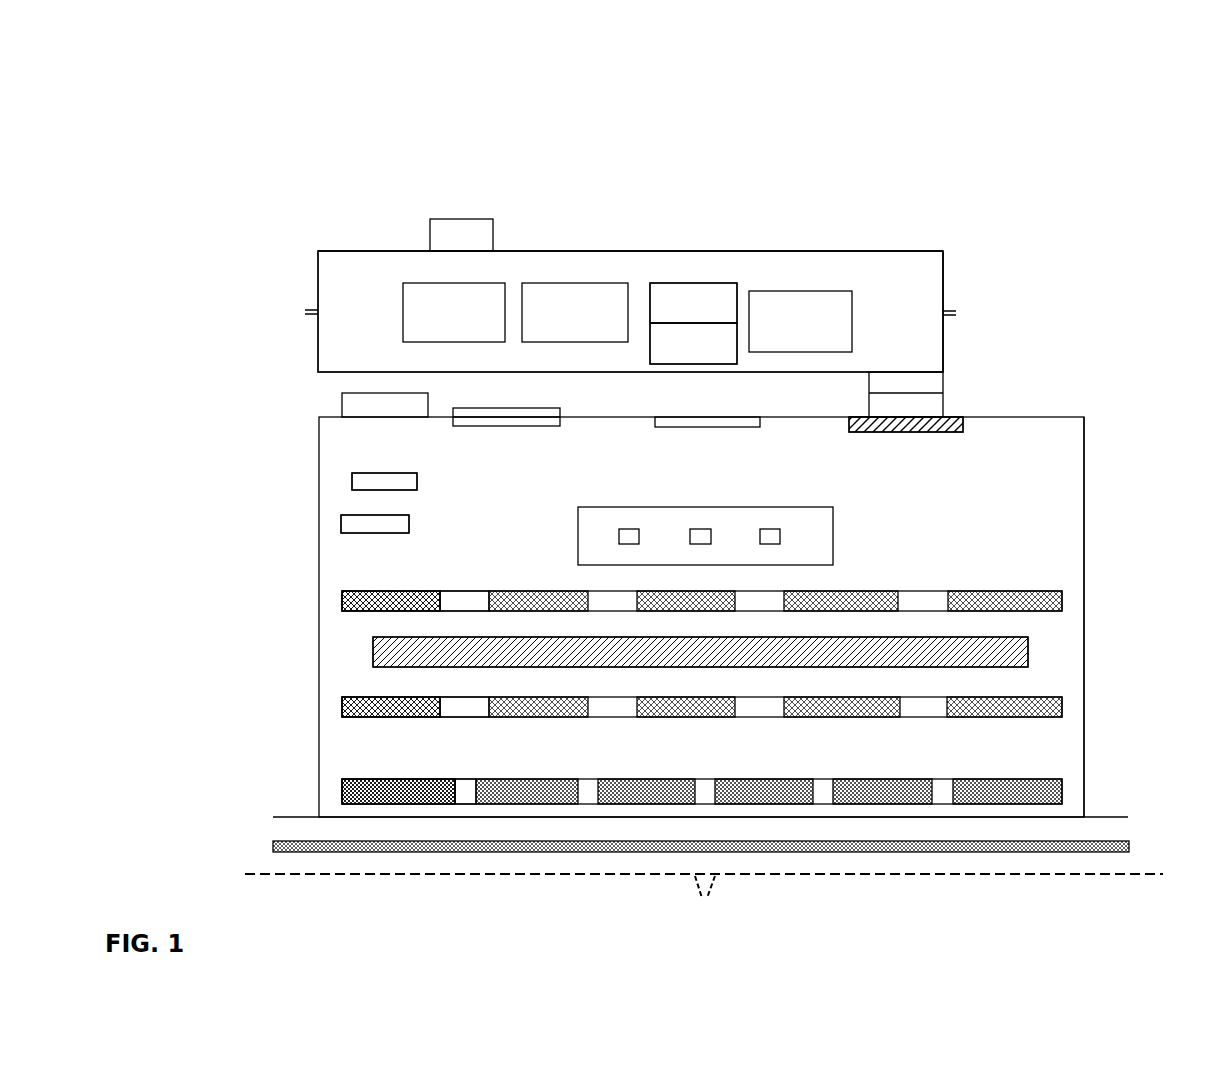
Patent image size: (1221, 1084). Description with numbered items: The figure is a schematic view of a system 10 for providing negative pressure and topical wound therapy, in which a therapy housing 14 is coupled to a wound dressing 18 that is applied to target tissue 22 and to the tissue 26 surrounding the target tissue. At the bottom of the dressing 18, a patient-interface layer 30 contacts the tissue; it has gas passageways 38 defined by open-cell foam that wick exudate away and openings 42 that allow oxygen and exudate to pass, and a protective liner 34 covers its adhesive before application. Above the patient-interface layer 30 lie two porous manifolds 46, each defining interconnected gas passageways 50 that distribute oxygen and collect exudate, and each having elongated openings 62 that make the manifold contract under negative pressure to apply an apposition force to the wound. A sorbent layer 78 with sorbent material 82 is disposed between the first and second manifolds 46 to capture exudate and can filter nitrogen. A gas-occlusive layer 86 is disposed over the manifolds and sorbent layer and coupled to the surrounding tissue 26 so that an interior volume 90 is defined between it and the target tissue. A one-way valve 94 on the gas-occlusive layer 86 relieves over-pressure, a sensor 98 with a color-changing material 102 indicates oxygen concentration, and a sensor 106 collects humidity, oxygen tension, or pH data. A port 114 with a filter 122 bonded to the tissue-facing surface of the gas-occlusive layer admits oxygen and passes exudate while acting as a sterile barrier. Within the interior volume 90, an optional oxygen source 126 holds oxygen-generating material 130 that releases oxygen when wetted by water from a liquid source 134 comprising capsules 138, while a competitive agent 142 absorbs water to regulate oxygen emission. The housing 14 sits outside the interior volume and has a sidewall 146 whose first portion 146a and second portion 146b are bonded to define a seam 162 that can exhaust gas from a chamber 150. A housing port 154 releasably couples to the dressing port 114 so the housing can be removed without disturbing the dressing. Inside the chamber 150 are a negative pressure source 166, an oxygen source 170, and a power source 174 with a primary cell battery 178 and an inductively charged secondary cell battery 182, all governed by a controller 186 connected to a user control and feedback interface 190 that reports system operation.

The system 10 is at (235, 110).
The therapy housing 14 is at (333, 205).
The wound dressing 18 is at (160, 420).
The target tissue 22 is at (697, 905).
The tissue surrounding the target tissue 26 is at (455, 893).
The patient-interface layer 30 is at (1063, 787).
The protective liner 34 is at (1130, 845).
The gas passageways 38 is at (358, 792).
The openings 42 is at (453, 795).
The manifold 46 is at (1063, 600).
The gas passageways 50 is at (360, 601).
The openings 62 is at (438, 597).
The sorbent layer 78 is at (1030, 640).
The sorbent material 82 is at (1030, 656).
The gas-occlusive layer 86 is at (1085, 532).
The interior volume 90 is at (1024, 545).
The valve 94 is at (329, 403).
The sensor 98 is at (563, 410).
The material 102 is at (510, 428).
The sensor 106 is at (705, 432).
The port 114 is at (958, 405).
The filter 122 is at (950, 433).
The oxygen source 126 is at (576, 535).
The oxygen-generating material 130 is at (782, 538).
The liquid source 134 is at (337, 468).
The capsules 138 is at (352, 481).
The competitive agent 142 is at (341, 525).
The sidewall 146 is at (566, 252).
The first portion 146a is at (848, 252).
The second portion 146b is at (943, 342).
The chamber 150 is at (362, 292).
The port 154 is at (949, 376).
The seam 162 is at (302, 310).
The negative pressure source 166 is at (454, 312).
The oxygen source 170 is at (575, 312).
The power source 174 is at (667, 270).
The primary cell battery 178 is at (693, 303).
The secondary cell battery 182 is at (693, 343).
The controller 186 is at (800, 321).
The user control and/or feedback interface 190 is at (470, 214).